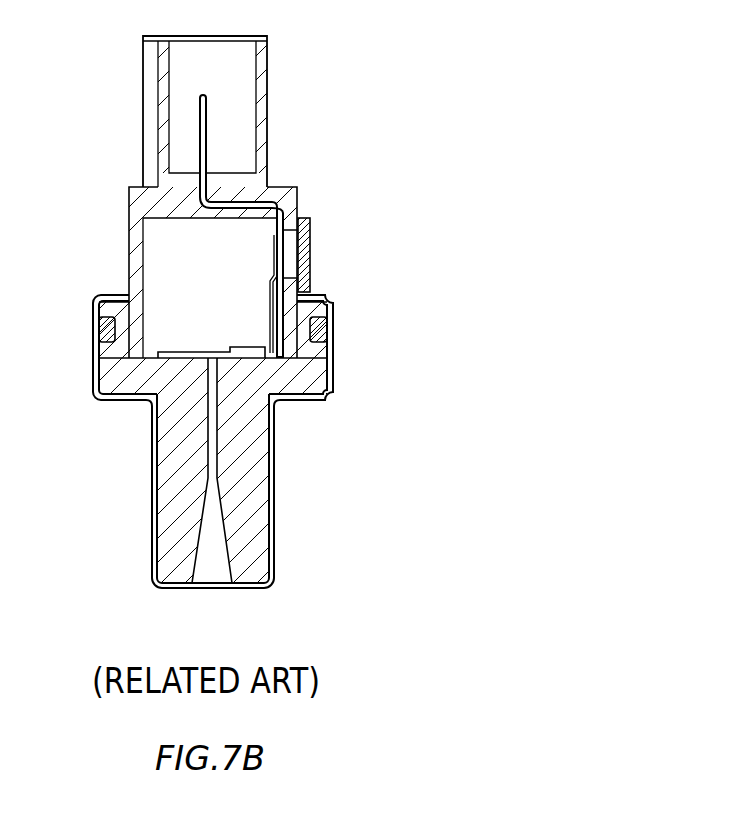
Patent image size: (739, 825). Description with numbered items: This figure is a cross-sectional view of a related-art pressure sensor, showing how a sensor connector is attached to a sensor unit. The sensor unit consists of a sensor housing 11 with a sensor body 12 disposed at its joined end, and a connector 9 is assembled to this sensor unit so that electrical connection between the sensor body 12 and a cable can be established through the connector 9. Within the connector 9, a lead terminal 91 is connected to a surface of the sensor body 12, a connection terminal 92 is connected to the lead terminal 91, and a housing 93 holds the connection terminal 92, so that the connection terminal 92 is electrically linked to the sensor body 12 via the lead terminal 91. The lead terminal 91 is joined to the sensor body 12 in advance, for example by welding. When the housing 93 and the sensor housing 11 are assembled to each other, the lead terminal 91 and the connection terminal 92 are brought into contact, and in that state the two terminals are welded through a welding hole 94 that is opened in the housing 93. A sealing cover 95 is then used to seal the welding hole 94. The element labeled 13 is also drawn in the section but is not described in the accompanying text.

The connector 9 is at (320, 112).
The sensor housing 11 is at (307, 518).
The sensor body 12 is at (177, 350).
The base plate 13 is at (297, 357).
The lead terminal 91 is at (330, 298).
The connection terminal 92 is at (290, 215).
The housing 93 is at (129, 200).
The welding hole 94 is at (308, 240).
The sealing cover 95 is at (310, 268).